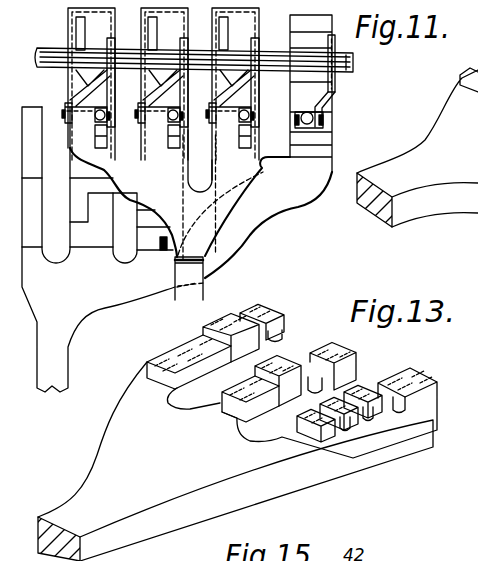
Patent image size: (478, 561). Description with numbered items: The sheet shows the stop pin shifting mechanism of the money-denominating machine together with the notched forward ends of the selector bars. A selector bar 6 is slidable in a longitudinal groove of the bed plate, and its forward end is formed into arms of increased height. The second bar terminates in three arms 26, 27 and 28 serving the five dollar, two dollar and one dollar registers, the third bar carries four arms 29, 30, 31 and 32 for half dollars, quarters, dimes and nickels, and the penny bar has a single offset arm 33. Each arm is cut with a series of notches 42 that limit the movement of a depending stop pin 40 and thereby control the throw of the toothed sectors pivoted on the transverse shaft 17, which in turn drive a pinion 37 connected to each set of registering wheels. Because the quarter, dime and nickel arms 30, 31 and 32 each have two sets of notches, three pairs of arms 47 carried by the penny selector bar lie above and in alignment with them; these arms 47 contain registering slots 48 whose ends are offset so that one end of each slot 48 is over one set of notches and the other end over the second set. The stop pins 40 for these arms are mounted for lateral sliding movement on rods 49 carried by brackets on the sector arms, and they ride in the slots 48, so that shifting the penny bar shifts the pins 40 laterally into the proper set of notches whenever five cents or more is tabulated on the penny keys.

In FIG. 11, the selector bar 6 is at (68, 345).
In FIG. 13, the selector bar 6 is at (226, 461).
In FIG. 11, the transverse shaft 17 is at (270, 56).
In FIG. 13, the arm 26 is at (280, 351).
In FIG. 13, the arm 27 is at (289, 385).
In FIG. 13, the arm 28 is at (395, 440).
In FIG. 11, the arm 29 is at (36, 220).
In FIG. 11, the arm 30 is at (80, 233).
In FIG. 11, the arm 31 is at (150, 231).
In FIG. 11, the arm 32 is at (249, 224).
In FIG. 11, the offset arm 33 is at (320, 167).
In FIG. 11, the driven pinion 37 is at (110, 107).
In FIG. 11, the stop pin 40 is at (189, 126).
In FIG. 13, the notches 42 is at (352, 398).
In FIG. 11, the arms 47 is at (266, 185).
In FIG. 11, the registering slots 48 is at (78, 27).
In FIG. 11, the rods 49 is at (87, 114).